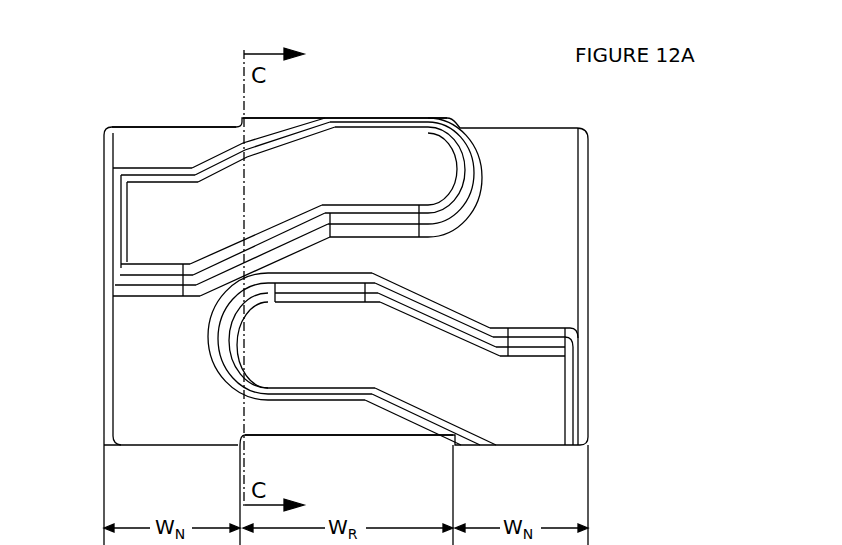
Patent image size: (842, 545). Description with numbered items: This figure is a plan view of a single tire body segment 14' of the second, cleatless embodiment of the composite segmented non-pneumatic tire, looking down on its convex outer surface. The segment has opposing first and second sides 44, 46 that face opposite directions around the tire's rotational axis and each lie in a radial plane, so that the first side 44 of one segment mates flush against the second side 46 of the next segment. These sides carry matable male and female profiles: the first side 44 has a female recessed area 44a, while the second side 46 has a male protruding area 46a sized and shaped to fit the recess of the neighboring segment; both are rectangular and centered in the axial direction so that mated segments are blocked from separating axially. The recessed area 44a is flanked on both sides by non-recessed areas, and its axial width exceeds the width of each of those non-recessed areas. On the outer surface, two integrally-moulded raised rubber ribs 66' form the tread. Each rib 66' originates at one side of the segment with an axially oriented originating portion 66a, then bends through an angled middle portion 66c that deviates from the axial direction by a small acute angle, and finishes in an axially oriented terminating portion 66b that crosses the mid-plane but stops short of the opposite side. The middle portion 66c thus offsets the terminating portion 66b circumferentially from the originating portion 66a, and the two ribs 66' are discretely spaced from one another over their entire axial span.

The tire body segment 14' is at (382, 281).
The first side 44 is at (150, 448).
The recessed area 44a is at (365, 440).
The second side 46 is at (150, 125).
The protruding area 46a is at (277, 113).
The raised rubber rib 66' is at (354, 281).
The originating portion 66a is at (148, 207).
The terminating portion 66b is at (380, 132).
The angled middle portion 66c is at (225, 207).